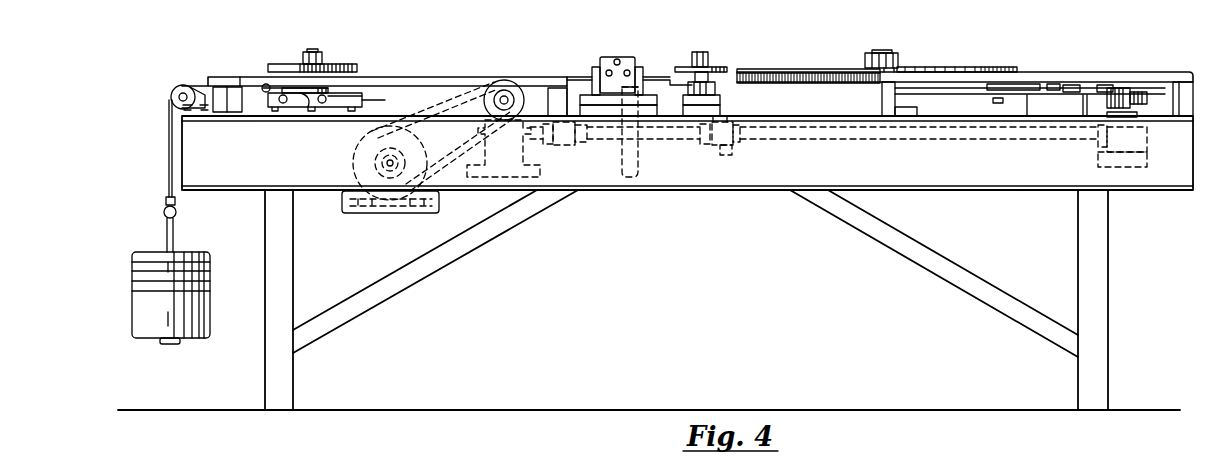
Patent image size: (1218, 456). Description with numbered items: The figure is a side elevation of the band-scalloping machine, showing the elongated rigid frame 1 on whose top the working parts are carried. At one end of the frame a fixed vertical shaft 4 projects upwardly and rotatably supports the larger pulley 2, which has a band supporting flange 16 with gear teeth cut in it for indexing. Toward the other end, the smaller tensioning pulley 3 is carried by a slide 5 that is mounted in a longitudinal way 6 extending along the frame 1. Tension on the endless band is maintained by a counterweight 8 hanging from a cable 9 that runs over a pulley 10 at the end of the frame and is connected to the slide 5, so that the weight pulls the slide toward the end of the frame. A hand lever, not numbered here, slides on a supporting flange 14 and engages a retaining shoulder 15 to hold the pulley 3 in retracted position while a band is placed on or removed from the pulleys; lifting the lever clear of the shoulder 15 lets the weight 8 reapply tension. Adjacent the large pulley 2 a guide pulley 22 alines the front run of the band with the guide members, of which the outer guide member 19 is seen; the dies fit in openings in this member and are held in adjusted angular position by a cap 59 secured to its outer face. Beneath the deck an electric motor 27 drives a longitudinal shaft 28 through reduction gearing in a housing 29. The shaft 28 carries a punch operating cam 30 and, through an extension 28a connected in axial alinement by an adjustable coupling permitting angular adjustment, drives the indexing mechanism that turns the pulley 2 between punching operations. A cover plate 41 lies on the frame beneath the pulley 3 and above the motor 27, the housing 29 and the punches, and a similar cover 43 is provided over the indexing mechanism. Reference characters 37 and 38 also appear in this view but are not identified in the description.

The frame 1 is at (738, 180).
The pulley 2 is at (985, 67).
The pulley 3 is at (336, 63).
The vertical shaft 4 is at (888, 53).
The slide 5 is at (243, 137).
The way 6 is at (365, 100).
The counterweight 8 is at (211, 302).
The cable 9 is at (168, 150).
The pulley 10 is at (190, 96).
The supporting flange 14 is at (297, 111).
The retaining shoulder 15 is at (302, 100).
The band supporting flange 16 is at (808, 70).
The guide member 19 is at (634, 90).
The guide pulley 22 is at (712, 66).
The electric motor 27 is at (353, 170).
The longitudinal shaft 28 is at (585, 142).
The extension 28a is at (940, 143).
The housing 29 is at (524, 152).
The punch operating cam 30 is at (641, 149).
The bearing 37 is at (717, 152).
The bearing bracket 38 is at (727, 155).
The cover plate 41 is at (444, 77).
The cover 43 is at (1147, 71).
The cap 59 is at (608, 57).